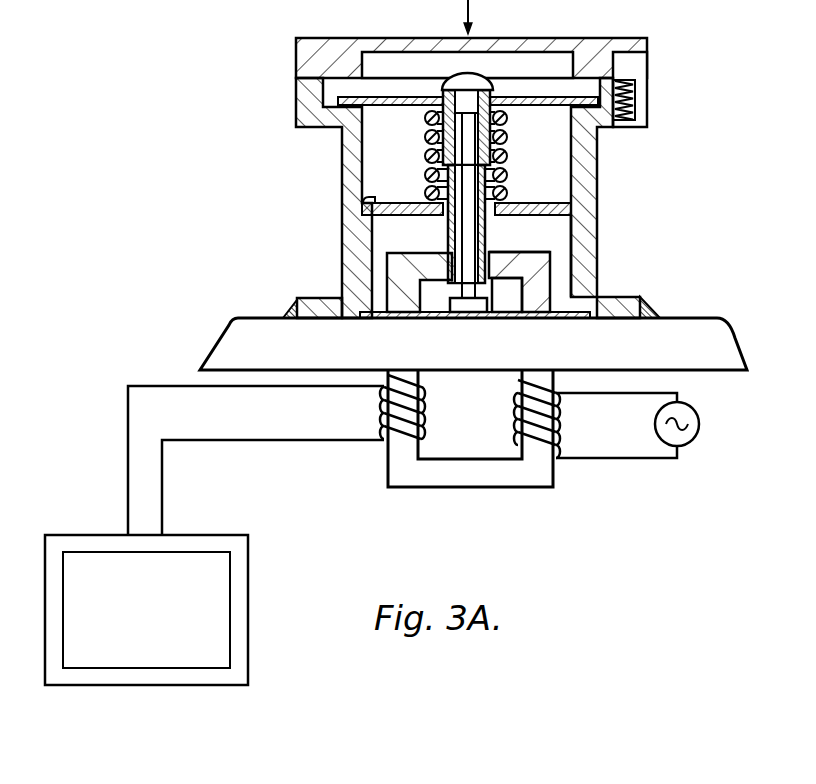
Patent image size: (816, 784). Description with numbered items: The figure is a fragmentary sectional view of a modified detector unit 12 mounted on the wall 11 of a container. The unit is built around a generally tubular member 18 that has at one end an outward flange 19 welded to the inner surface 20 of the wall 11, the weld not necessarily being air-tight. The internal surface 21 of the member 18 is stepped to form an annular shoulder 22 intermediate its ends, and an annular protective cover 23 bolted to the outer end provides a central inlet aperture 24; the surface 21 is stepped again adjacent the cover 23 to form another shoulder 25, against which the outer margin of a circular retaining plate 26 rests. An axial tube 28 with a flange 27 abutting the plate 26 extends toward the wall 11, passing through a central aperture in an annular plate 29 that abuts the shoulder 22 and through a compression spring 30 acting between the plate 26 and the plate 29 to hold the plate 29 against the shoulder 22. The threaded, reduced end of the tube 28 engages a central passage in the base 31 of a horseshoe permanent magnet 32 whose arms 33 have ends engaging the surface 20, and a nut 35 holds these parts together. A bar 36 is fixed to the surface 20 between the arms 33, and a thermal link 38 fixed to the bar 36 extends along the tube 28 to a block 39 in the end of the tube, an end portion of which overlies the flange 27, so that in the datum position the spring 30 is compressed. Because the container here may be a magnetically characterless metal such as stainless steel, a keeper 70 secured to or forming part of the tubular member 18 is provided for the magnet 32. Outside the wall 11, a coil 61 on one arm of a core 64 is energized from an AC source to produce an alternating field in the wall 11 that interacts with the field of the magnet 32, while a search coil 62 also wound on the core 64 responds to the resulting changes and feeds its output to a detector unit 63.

The wall 11 is at (259, 333).
The detector unit 12 is at (598, 221).
The tubular member 18 is at (597, 152).
The outward flange 19 is at (607, 302).
The inner surface 20 is at (673, 317).
The internal surface 21 is at (563, 243).
The annular shoulder 22 is at (572, 202).
The annular protective cover 23 is at (580, 46).
The inlet aperture 24 is at (486, 17).
The shoulder 25 is at (630, 86).
The circular retaining plate 26 is at (575, 98).
The flange 27 is at (498, 86).
The axial tube 28 is at (430, 156).
The annular plate 29 is at (372, 199).
The compression spring 30 is at (427, 135).
The base 31 is at (500, 256).
The horseshoe permanent magnet 32 is at (531, 232).
The arms 33 is at (400, 295).
The nut 35 is at (507, 295).
The bar 36 is at (471, 316).
The thermal link 38 is at (472, 153).
The block 39 is at (462, 98).
The coil 61 is at (558, 428).
The search coil 62 is at (424, 428).
The detector unit 63 is at (248, 568).
The core 64 is at (473, 478).
The keeper 70 is at (450, 320).